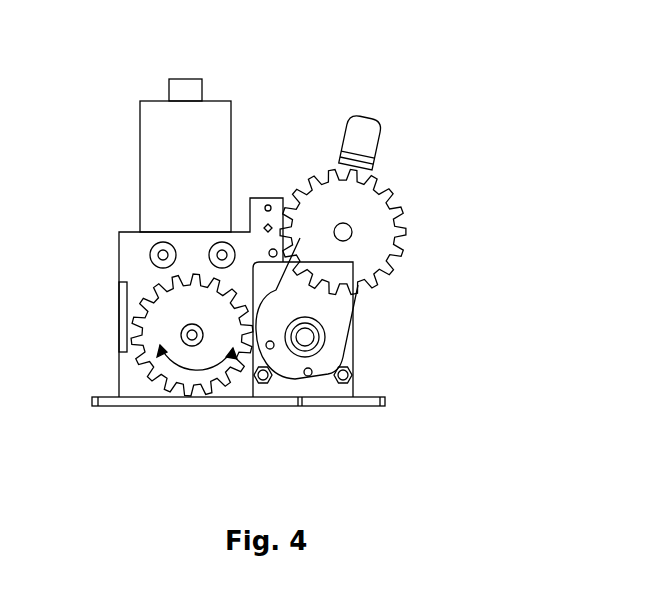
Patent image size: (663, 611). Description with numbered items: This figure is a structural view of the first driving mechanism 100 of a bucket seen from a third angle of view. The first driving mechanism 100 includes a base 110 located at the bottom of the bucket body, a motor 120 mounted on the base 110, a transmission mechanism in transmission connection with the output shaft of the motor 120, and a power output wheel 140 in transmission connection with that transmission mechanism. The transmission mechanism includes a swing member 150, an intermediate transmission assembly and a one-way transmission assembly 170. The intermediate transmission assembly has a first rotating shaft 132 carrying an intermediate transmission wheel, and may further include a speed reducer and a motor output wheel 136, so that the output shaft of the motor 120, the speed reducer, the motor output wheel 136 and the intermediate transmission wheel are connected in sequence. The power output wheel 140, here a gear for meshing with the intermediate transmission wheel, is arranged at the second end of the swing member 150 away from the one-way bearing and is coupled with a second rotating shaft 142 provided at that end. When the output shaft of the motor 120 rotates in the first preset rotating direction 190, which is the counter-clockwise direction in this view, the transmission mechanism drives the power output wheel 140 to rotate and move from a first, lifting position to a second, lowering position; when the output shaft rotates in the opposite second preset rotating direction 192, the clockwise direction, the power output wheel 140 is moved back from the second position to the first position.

The first driving mechanism 100 is at (265, 45).
The base 110 is at (110, 379).
The motor 120 is at (155, 177).
The first rotating shaft 132 is at (306, 338).
The motor output wheel 136 is at (175, 382).
The power output wheel 140 is at (370, 245).
The second rotating shaft 142 is at (339, 226).
The swing member 150 is at (309, 376).
The one-way transmission assembly 170 is at (323, 331).
The first preset rotating direction 190 is at (205, 382).
The second preset rotating direction 192 is at (220, 375).